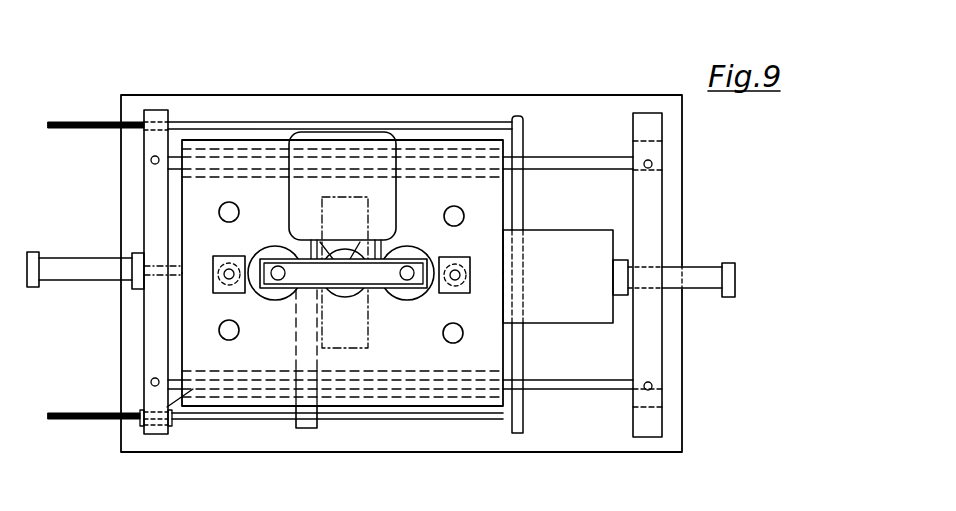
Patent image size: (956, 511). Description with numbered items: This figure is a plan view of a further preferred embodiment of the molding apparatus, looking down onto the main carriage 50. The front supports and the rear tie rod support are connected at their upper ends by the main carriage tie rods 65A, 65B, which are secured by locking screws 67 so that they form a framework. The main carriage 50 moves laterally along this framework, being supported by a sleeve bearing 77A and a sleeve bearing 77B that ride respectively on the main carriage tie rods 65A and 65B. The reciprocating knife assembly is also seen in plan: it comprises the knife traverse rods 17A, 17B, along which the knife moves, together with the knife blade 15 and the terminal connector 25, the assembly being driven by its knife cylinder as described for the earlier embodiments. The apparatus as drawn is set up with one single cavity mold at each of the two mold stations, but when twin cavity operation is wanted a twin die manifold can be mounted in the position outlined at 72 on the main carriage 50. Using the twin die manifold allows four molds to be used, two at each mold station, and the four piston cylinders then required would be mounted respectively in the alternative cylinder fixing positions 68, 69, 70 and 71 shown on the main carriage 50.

The knife blade 15 is at (318, 428).
The knife traverse rod 17A is at (397, 420).
The knife traverse rod 17B is at (443, 132).
The terminal connector 25 is at (303, 424).
The main carriage 50 is at (262, 148).
The main carriage tie rod 65A is at (562, 387).
The main carriage tie rod 65B is at (580, 163).
The locking screw 67 is at (655, 388).
The alternative cylinder fixing position 68 is at (229, 340).
The alternative cylinder fixing position 69 is at (228, 203).
The alternative cylinder fixing position 70 is at (455, 343).
The alternative cylinder fixing position 71 is at (458, 208).
The twin die manifold position 72 is at (365, 197).
The sleeve bearing 77A is at (140, 422).
The sleeve bearing 77B is at (188, 150).